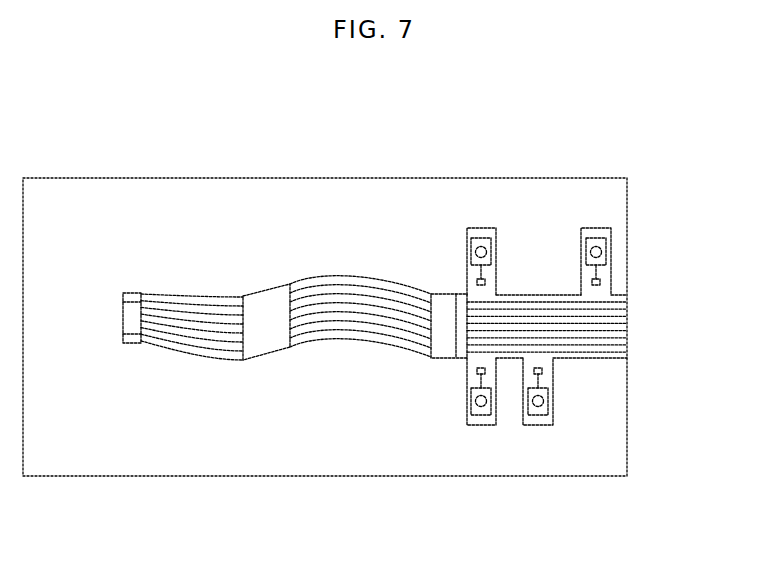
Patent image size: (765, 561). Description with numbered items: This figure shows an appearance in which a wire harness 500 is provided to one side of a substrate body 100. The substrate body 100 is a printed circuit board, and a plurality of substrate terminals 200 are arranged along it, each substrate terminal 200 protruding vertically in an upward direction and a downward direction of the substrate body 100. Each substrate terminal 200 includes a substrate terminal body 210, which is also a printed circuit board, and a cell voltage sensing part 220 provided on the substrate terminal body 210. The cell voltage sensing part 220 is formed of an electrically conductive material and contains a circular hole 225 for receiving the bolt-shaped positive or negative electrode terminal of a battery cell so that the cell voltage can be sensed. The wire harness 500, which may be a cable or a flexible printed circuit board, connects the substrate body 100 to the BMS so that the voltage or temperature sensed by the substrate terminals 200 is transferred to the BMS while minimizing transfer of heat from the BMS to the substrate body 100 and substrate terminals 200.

The substrate body 100 is at (620, 312).
The substrate terminal 200 is at (593, 345).
The substrate terminal body 210 is at (522, 395).
The cell voltage sensing part 220 is at (538, 417).
The circular hole 225 is at (550, 392).
The wire harness 500 is at (342, 338).